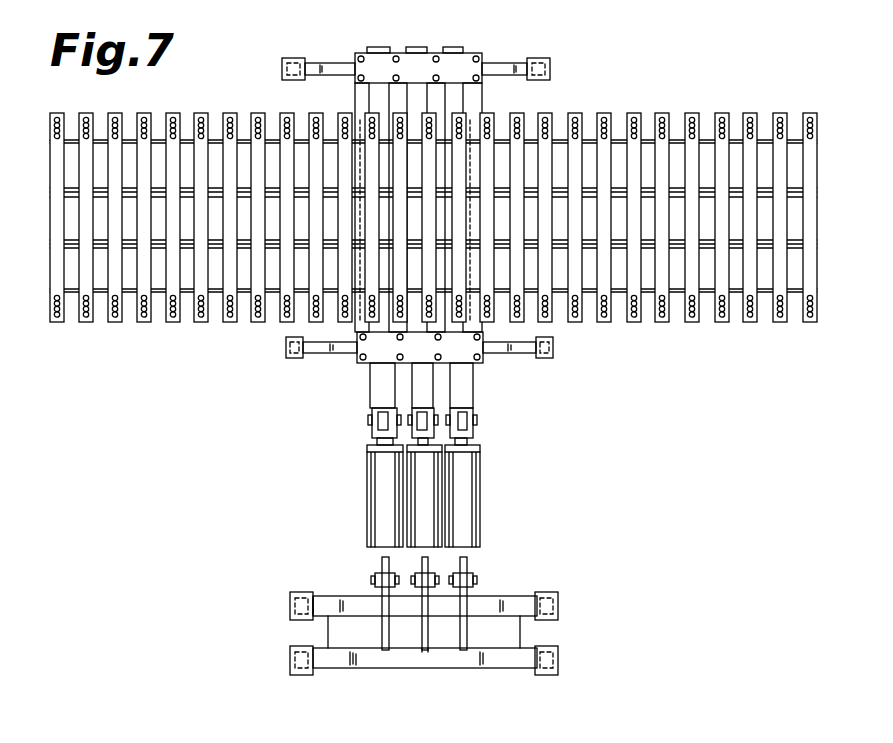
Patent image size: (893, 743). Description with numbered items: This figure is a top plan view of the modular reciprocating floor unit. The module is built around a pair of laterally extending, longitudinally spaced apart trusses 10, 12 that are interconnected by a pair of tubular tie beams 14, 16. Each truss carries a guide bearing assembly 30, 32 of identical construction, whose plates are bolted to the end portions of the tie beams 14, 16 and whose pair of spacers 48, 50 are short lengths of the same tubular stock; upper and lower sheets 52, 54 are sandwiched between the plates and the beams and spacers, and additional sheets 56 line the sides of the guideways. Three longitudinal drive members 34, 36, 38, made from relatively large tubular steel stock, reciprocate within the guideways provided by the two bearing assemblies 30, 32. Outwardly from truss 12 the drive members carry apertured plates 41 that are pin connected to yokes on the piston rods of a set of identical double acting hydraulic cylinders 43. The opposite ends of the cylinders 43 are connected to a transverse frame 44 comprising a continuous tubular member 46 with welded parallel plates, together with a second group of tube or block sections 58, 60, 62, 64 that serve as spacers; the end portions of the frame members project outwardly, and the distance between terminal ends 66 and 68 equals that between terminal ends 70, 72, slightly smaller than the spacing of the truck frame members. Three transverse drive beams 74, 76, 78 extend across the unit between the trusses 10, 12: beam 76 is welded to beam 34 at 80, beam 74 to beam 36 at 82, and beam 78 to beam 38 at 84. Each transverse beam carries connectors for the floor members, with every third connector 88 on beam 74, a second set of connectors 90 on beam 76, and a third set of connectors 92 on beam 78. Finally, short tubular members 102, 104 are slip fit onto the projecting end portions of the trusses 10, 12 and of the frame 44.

The truss 10 is at (333, 63).
The truss 12 is at (317, 355).
The tie beam 14 is at (355, 92).
The tie beam 16 is at (482, 92).
The bearing assembly 30 is at (455, 44).
The bearing assembly 32 is at (345, 370).
The longitudinal drive member 34 is at (465, 396).
The longitudinal drive member 36 is at (435, 370).
The longitudinal drive member 38 is at (378, 388).
The apertured plate 41 is at (372, 420).
The double acting hydraulic cylinder 43 is at (368, 490).
The transverse frame 44 is at (497, 585).
The continuous tubular member 46 is at (505, 650).
The spacer 48 is at (383, 605).
The spacer 50 is at (325, 596).
The upper sheet 52 is at (400, 603).
The lower sheet 54 is at (440, 600).
The side sheet 56 is at (510, 603).
The tube or block section 58 is at (328, 630).
The tube or block section 60 is at (395, 648).
The tube or block section 62 is at (440, 650).
The tube or block section 64 is at (522, 632).
The terminal end 66 is at (288, 599).
The terminal end 68 is at (560, 600).
The terminal end 70 is at (300, 663).
The terminal end 72 is at (565, 657).
The transverse drive beam 74 is at (617, 148).
The transverse drive beam 76 is at (647, 205).
The transverse drive beam 78 is at (675, 277).
The weld 80 is at (470, 218).
The weld 82 is at (430, 155).
The weld 84 is at (372, 266).
The connector 88 is at (775, 152).
The connector 90 is at (797, 127).
The connector 92 is at (742, 312).
The short tubular member 102 is at (283, 68).
The short tubular member 104 is at (290, 606).